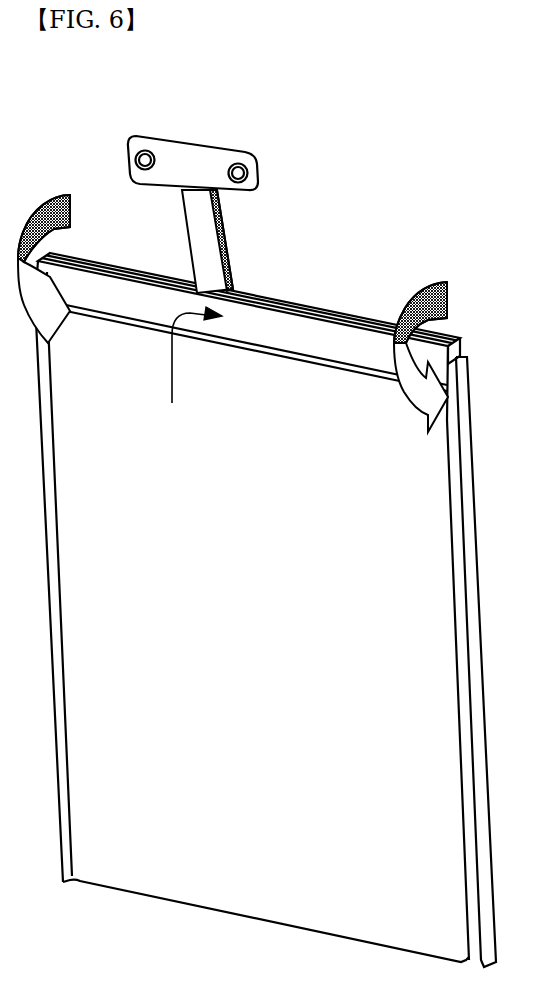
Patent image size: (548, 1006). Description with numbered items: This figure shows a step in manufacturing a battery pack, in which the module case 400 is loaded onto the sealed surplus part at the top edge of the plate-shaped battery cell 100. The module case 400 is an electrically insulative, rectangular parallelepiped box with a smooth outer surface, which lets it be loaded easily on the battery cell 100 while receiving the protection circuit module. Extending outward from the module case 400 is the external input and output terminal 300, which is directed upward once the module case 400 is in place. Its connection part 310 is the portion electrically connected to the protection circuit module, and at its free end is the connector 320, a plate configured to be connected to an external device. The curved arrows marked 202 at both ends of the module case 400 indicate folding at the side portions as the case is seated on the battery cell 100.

The plate-shaped battery cell 100 is at (252, 715).
The folding wing / sealing portion of battery 202 is at (55, 215).
The external input and output terminal 300 is at (291, 200).
The connection part 310 is at (217, 233).
The connector 320 is at (207, 152).
The module case 400 is at (183, 377).